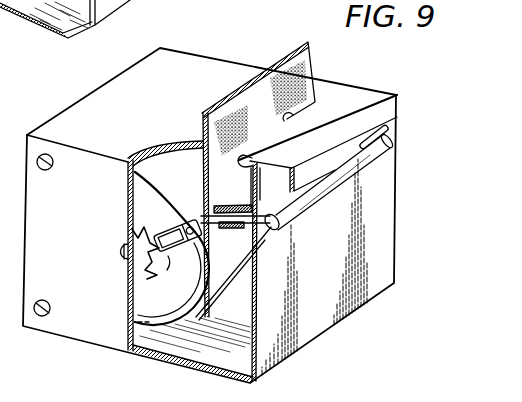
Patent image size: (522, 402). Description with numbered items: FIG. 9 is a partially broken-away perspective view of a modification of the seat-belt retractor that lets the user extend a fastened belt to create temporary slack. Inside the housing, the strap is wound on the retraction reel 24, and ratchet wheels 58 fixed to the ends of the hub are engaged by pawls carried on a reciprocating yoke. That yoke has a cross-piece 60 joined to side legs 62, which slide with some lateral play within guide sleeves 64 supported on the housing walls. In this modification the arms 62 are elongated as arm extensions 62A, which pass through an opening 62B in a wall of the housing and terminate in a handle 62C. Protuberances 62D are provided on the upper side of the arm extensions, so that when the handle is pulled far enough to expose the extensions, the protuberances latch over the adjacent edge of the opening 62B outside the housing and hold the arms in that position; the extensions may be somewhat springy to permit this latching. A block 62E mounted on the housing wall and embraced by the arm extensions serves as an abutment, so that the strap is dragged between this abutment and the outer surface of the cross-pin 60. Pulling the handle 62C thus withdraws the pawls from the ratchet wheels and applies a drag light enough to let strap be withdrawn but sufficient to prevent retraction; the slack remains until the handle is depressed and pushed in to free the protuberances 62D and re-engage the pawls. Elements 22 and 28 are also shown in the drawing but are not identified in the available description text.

The bracket plate 22 is at (308, 66).
The retraction reel 24 is at (180, 301).
The stop 28 is at (289, 118).
The ratchet wheel 58 is at (127, 246).
The cross-piece 60 is at (180, 222).
The side legs 62 is at (147, 279).
The arm extension 62A is at (240, 285).
The opening 62B is at (380, 131).
The handle 62C is at (392, 134).
The protuberance 62D is at (256, 165).
The block 62E is at (221, 206).
The guide sleeve 64 is at (181, 265).